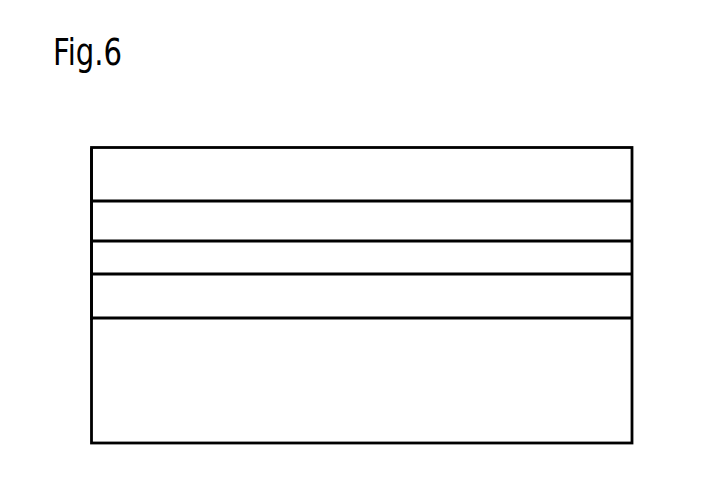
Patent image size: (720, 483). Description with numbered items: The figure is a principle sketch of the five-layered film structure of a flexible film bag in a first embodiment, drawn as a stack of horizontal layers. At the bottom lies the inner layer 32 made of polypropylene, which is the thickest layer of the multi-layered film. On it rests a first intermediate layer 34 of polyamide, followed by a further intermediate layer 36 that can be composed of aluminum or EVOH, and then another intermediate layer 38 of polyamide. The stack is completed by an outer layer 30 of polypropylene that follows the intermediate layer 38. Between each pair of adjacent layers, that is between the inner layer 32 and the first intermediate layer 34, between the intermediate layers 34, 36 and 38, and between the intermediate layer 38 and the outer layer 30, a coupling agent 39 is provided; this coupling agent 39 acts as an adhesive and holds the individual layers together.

The outer layer 30 is at (620, 175).
The inner layer 32 is at (615, 386).
The first intermediate layer 34 is at (617, 299).
The further intermediate layer 36 is at (626, 259).
The further intermediate layer 38 is at (620, 221).
The coupling agent 39 is at (112, 201).